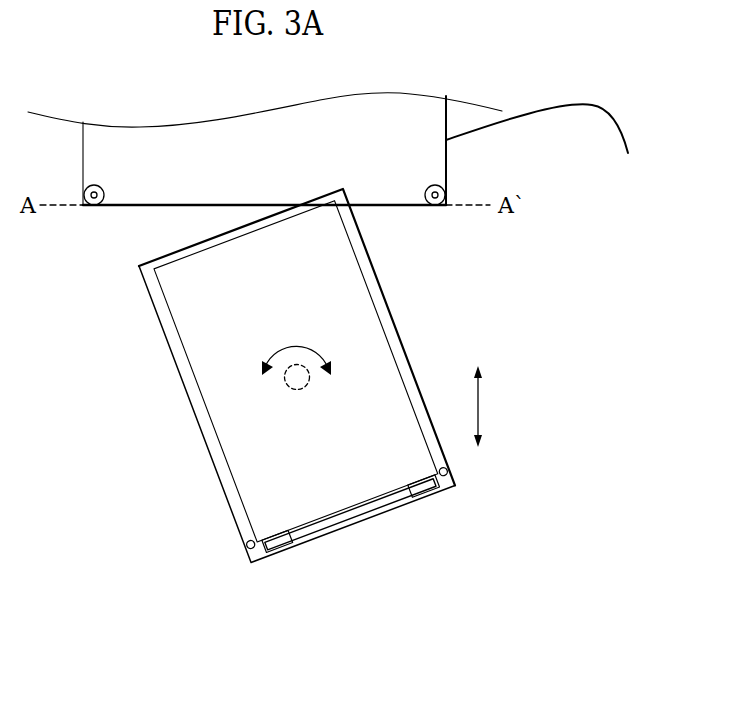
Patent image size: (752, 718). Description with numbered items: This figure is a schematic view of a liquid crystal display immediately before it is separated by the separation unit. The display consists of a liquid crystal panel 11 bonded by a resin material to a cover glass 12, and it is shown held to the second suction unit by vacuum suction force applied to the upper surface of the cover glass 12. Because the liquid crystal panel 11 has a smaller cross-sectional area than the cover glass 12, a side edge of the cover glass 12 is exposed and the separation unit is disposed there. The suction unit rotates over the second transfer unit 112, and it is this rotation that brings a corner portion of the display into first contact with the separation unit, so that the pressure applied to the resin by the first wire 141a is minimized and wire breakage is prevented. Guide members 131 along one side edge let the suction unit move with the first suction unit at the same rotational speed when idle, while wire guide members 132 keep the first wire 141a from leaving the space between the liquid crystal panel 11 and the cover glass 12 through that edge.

The liquid crystal panel 11 is at (192, 368).
The cover glass 12 is at (155, 309).
The second transfer unit 112 is at (285, 381).
The guide members 131 is at (420, 508).
The wire guide members 132 is at (447, 495).
The first wire 141a is at (554, 153).